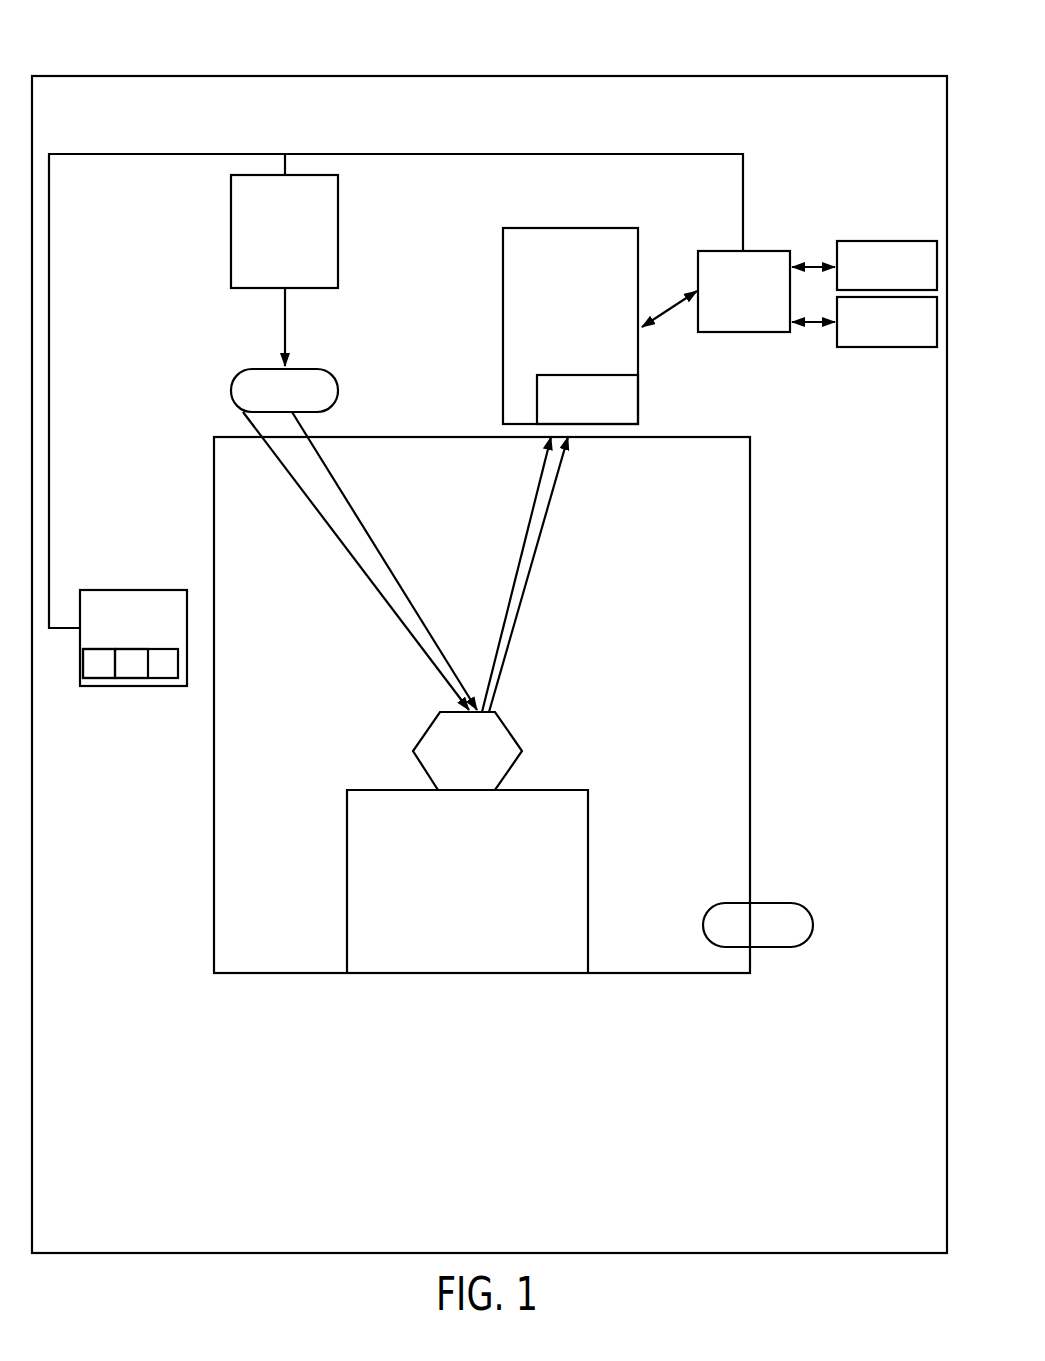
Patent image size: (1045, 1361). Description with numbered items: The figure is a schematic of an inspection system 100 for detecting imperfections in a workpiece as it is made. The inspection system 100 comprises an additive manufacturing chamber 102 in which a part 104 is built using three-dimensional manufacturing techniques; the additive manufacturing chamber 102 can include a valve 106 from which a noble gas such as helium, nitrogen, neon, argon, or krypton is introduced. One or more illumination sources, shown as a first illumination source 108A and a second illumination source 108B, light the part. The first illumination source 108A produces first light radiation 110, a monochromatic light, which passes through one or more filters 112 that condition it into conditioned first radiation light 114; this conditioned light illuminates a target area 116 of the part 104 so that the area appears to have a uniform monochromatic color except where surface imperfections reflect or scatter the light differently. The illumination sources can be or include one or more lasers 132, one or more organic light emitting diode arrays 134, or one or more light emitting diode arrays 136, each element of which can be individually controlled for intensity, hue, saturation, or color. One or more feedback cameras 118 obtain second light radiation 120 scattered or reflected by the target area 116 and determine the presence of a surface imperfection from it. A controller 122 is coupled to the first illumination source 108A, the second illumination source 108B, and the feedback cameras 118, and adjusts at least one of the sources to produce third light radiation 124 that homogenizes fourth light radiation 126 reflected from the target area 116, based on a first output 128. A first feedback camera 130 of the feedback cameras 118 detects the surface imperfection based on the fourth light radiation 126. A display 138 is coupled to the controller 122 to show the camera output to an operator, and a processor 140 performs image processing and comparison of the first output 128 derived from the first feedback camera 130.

The inspection system 100 is at (148, 76).
The additive manufacturing chamber 102 is at (760, 463).
The part 104 is at (503, 737).
The valve 106 is at (770, 903).
The first illumination source 108A is at (258, 175).
The second illumination source 108B is at (143, 610).
The first light radiation 110 is at (282, 352).
The filter 112 is at (232, 392).
The conditioned first radiation light 114 is at (338, 487).
The target area 116 is at (497, 702).
The feedback camera 118 is at (571, 228).
The second light radiation 120 is at (545, 535).
The controller 122 is at (775, 251).
The third light radiation 124 is at (338, 532).
The fourth light radiation 126 is at (548, 505).
The first output 128 is at (666, 308).
The first feedback camera 130 is at (565, 385).
The laser 132 is at (94, 676).
The organic light emitting diode array 134 is at (135, 672).
The light emitting diode array 136 is at (178, 666).
The display 138 is at (880, 241).
The processor 140 is at (888, 347).